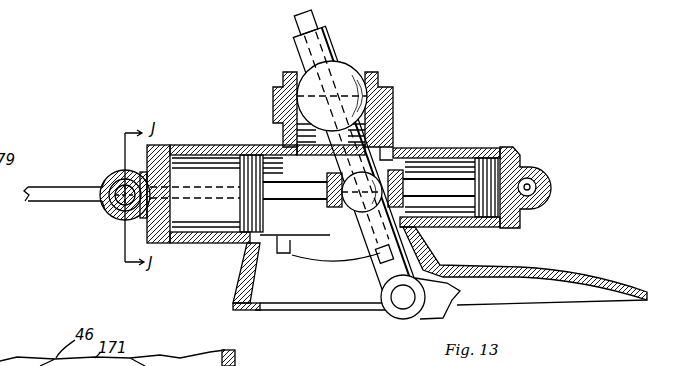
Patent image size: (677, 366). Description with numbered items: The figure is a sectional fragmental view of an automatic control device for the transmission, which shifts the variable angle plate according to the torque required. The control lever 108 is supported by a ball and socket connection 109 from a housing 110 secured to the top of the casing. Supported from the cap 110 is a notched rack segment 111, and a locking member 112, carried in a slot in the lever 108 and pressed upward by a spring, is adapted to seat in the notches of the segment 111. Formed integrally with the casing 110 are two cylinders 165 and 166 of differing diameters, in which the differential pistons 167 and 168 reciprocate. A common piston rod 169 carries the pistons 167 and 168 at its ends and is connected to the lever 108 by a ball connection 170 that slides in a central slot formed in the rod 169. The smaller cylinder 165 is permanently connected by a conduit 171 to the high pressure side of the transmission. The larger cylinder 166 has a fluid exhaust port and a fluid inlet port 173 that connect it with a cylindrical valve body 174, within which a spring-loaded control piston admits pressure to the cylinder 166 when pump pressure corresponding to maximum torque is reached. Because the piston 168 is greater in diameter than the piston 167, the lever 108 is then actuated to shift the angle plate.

The control lever 108 is at (387, 146).
The ball and socket connection 109 is at (380, 74).
The housing 110 is at (528, 262).
The notched rack segment 111 is at (330, 238).
The locking member 112 is at (377, 258).
The cylinder 165 is at (475, 148).
The cylinder 166 is at (217, 146).
The differential piston 167 is at (505, 142).
The differential piston 168 is at (220, 244).
The common piston rod 169 is at (292, 256).
The ball connection 170 is at (413, 148).
The conduit 171 is at (37, 201).
The fluid inlet port 173 is at (120, 231).
The cylindrical valve body 174 is at (100, 188).